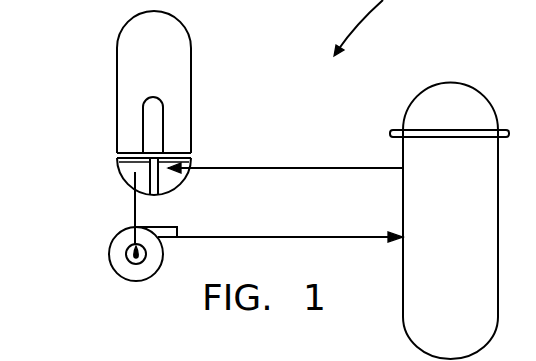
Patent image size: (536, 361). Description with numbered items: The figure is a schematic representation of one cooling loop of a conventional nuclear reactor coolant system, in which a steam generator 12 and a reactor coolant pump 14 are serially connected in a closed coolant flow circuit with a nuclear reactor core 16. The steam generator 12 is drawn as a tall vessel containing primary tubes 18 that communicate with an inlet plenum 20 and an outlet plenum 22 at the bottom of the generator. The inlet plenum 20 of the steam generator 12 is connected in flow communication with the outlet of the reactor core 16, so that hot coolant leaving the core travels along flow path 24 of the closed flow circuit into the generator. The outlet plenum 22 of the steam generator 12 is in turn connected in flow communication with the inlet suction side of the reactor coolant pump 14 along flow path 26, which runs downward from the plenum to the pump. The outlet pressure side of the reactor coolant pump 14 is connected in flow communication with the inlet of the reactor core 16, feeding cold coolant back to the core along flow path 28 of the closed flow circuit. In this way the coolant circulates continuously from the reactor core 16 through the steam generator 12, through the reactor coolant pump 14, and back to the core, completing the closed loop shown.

The steam generator 12 is at (192, 88).
The reactor coolant pump 14 is at (111, 246).
The nuclear reactor core 16 is at (465, 265).
The primary tubes 18 is at (149, 98).
The inlet plenum 20 is at (166, 180).
The outlet plenum 22 is at (127, 163).
The flow path 24 is at (241, 166).
The flow path 26 is at (135, 206).
The flow path 28 is at (288, 236).